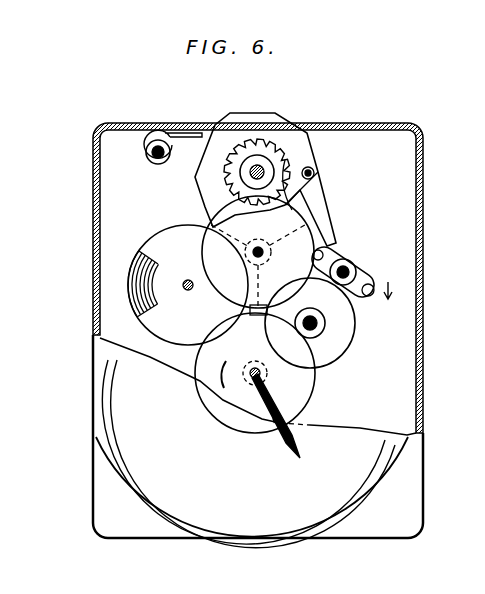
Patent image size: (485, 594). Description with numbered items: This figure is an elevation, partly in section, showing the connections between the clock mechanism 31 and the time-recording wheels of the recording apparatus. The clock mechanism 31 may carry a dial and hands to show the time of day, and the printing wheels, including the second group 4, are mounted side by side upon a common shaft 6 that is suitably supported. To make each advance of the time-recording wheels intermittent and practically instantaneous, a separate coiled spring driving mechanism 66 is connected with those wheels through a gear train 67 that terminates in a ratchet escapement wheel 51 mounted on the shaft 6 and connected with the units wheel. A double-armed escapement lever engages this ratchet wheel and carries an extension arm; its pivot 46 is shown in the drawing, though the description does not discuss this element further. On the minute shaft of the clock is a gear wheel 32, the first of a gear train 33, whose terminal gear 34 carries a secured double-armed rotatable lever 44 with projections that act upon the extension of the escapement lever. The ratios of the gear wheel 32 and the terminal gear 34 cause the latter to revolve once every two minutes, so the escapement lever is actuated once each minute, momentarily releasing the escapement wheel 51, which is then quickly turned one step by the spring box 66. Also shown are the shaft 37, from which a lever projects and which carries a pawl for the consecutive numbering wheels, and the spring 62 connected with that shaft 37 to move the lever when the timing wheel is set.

The second group of printing wheels 4 is at (287, 112).
The common shaft 6 is at (250, 172).
The clock mechanism 31 is at (226, 528).
The gear wheel 32 is at (305, 383).
The gear train 33 is at (352, 323).
The terminal gear 34 is at (350, 268).
The shaft 37 is at (186, 132).
The double-armed rotatable lever 44 is at (336, 246).
The pivot 46 is at (318, 200).
The ratchet escapement wheel 51 is at (249, 140).
The spring 62 is at (156, 140).
The coiled spring driving mechanism 66 is at (130, 275).
The gear train 67 is at (210, 256).